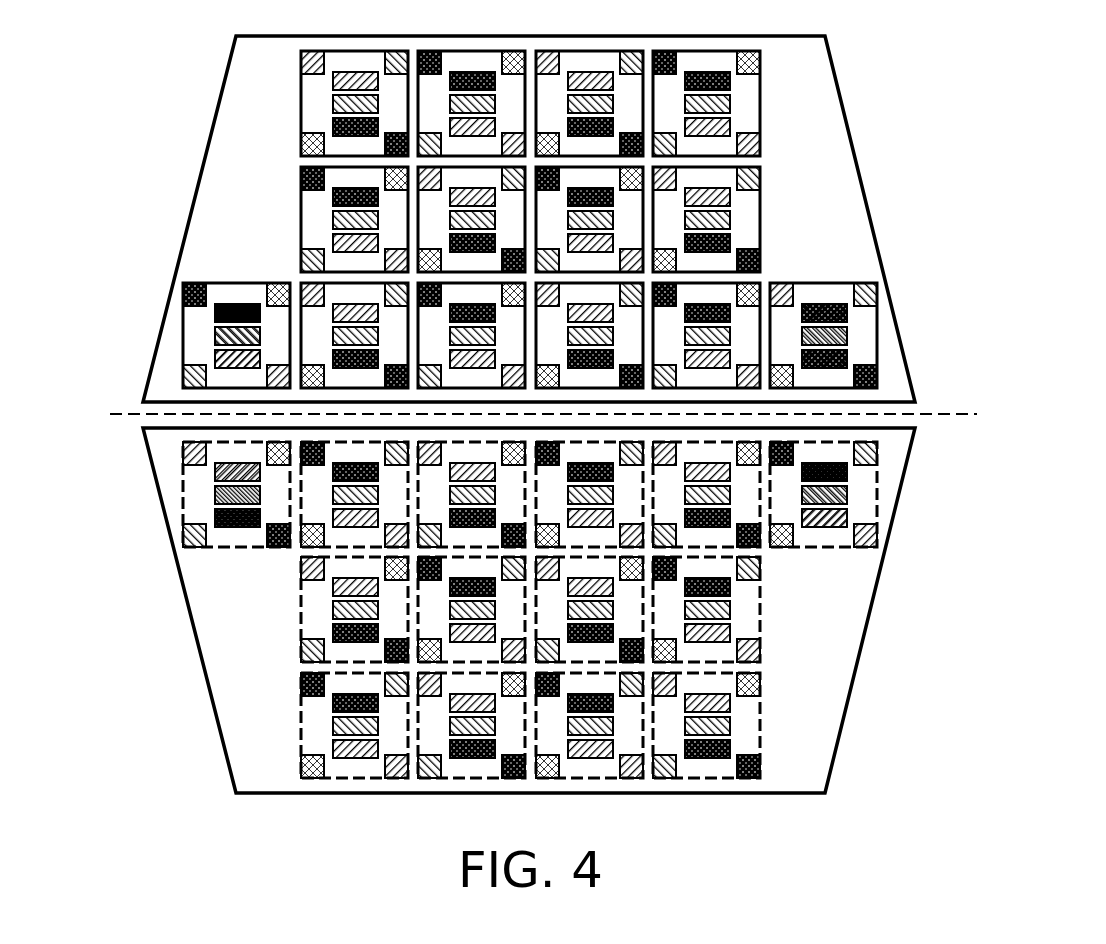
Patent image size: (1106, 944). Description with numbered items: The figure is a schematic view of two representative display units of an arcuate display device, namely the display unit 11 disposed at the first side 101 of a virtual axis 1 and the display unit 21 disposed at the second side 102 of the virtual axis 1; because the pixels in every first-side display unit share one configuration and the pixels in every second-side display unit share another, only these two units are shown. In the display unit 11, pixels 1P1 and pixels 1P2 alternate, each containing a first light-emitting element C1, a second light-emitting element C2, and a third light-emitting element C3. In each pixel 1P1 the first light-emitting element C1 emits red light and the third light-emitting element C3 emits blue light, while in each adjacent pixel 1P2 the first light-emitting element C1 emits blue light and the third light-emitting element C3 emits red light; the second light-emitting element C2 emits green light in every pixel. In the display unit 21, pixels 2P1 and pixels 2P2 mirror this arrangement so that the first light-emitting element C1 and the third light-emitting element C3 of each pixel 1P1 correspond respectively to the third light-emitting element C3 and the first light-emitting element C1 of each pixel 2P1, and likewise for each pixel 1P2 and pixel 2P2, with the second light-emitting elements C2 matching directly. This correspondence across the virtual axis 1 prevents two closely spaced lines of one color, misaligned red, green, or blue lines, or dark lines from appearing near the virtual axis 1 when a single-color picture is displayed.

The display unit 11 is at (216, 112).
The display unit 21 is at (216, 718).
The first side 101 is at (607, 219).
The second side 102 is at (587, 610).
The virtual axis 1 is at (974, 414).
The pixel 1P1 is at (236, 283).
The pixel 1P2 is at (334, 283).
The pixel 2P1 is at (335, 548).
The pixel 2P2 is at (216, 546).
The first light-emitting element C1 is at (215, 360).
The second light-emitting element C2 is at (215, 338).
The third light-emitting element C3 is at (215, 314).